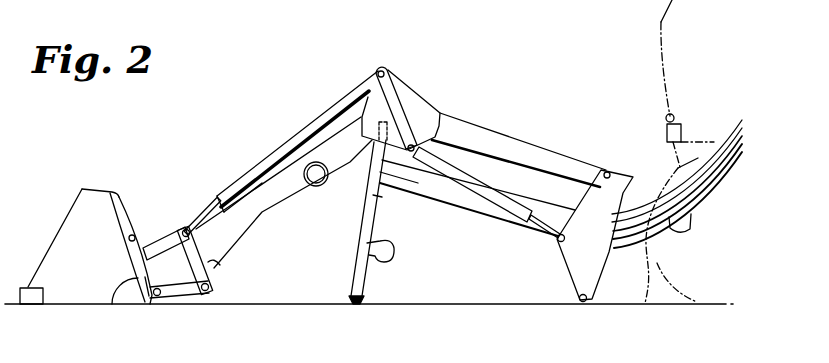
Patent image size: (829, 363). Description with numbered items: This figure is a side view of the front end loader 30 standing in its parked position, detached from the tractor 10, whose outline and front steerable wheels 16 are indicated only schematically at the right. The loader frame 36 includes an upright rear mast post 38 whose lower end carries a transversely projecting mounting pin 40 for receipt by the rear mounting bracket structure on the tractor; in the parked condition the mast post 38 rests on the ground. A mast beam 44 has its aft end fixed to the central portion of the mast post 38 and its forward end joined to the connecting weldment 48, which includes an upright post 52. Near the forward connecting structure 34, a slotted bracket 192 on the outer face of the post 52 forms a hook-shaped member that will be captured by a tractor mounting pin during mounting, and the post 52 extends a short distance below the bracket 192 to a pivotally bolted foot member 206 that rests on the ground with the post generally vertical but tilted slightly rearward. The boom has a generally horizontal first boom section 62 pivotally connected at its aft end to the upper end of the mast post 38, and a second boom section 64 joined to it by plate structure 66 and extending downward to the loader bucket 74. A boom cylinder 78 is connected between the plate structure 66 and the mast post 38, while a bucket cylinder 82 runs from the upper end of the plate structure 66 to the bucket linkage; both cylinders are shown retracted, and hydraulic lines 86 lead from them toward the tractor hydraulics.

The tractor 10 is at (641, 22).
The front steerable wheels 16 is at (650, 304).
The front end loader 30 is at (348, 68).
The forward connecting structure 34 is at (650, 115).
The loader frame 36 is at (379, 218).
The rear mast posts 38 is at (620, 172).
The mounting pin 40 is at (590, 293).
The mast beams 44 is at (450, 190).
The connecting weldment 48 is at (367, 201).
The upright posts 52 is at (353, 274).
The first boom section 62 is at (490, 137).
The second boom section 64 is at (258, 233).
The plate structure 66 is at (412, 118).
The loader bucket 74 is at (99, 265).
The boom cylinders 78 is at (508, 212).
The bucket cylinders 82 is at (277, 152).
The hydraulic lines 86 is at (697, 224).
The slotted brackets 192 is at (377, 262).
The foot members 206 is at (343, 295).